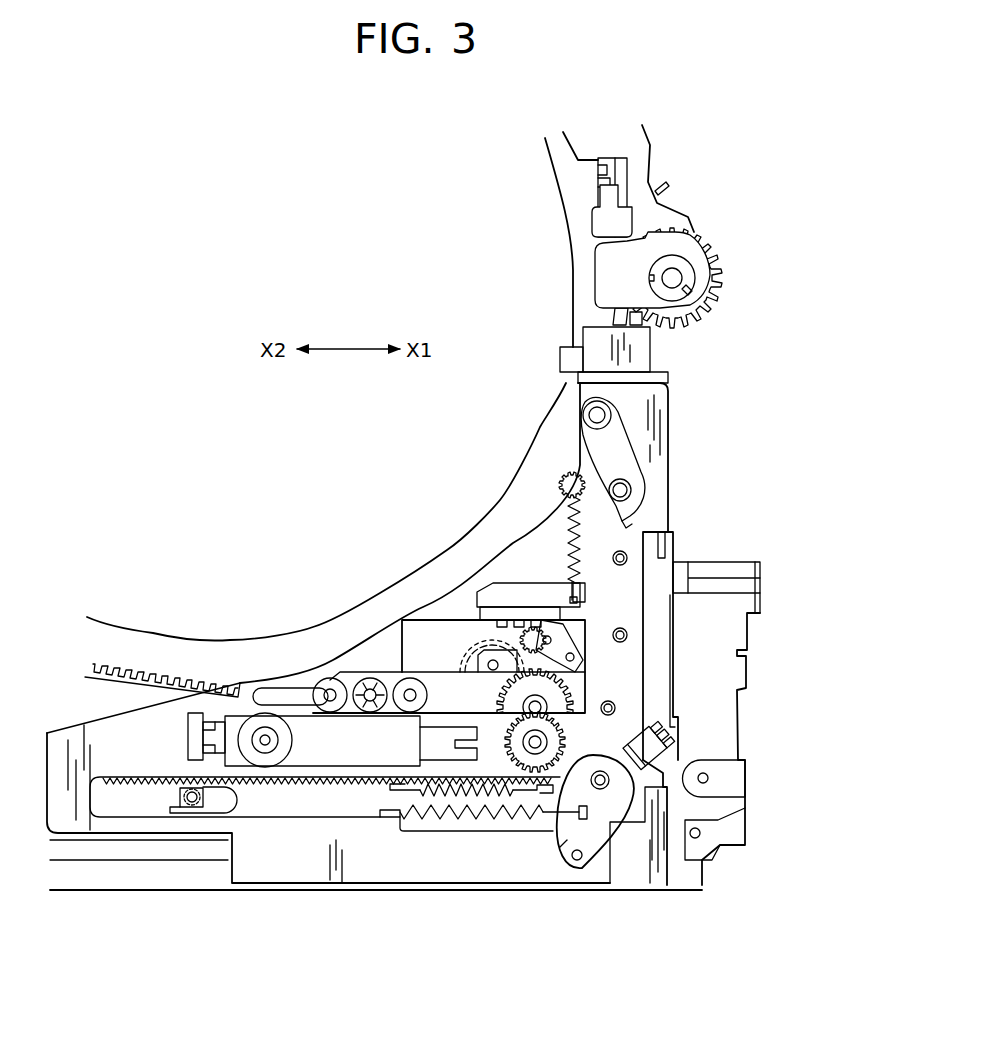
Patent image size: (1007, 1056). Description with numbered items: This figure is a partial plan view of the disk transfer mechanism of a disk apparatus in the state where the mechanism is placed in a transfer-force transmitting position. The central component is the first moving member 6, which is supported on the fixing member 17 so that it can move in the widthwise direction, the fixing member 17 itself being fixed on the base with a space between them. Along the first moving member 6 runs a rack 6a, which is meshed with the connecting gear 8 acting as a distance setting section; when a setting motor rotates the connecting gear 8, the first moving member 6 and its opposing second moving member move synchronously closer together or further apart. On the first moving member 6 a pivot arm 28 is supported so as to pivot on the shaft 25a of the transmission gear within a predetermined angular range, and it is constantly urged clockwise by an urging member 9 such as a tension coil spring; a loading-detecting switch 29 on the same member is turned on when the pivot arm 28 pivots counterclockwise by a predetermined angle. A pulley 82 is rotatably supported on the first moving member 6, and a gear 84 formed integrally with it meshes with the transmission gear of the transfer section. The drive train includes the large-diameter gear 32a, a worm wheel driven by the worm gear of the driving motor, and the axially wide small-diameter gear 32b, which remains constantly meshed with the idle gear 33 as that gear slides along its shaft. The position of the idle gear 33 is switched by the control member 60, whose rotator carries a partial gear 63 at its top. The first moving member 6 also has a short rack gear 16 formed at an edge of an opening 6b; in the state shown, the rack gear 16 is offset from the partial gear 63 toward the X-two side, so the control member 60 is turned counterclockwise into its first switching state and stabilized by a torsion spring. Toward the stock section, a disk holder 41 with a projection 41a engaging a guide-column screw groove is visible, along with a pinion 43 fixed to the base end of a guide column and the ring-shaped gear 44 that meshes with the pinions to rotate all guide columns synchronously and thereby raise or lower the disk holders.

The first moving member 6 is at (367, 662).
The rack 6a is at (270, 790).
The opening 6b is at (585, 628).
The connecting gear 8 is at (182, 814).
The urging member 9 is at (440, 822).
The rack gear 16 is at (508, 598).
The fixing member 17 is at (443, 690).
The shaft 25a is at (632, 782).
The pivot arm 28 is at (557, 773).
The loading-detecting switch 29 is at (663, 742).
The large-diameter gear 32a is at (590, 658).
The small-diameter gear 32b is at (590, 690).
The idle gear 33 is at (477, 633).
The disk holder 41 is at (653, 205).
The projection 41a is at (695, 299).
The pinion 43 is at (703, 245).
The ring-shaped gear 44 is at (155, 657).
The control member 60 is at (580, 617).
The partial gear 63 is at (527, 620).
The pulley 82 is at (517, 758).
The gear 84 is at (497, 760).